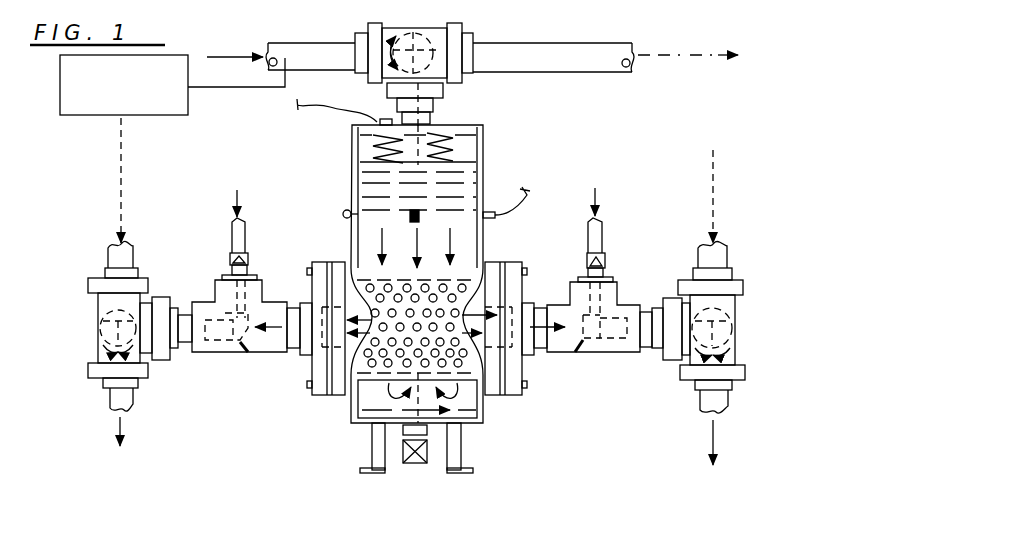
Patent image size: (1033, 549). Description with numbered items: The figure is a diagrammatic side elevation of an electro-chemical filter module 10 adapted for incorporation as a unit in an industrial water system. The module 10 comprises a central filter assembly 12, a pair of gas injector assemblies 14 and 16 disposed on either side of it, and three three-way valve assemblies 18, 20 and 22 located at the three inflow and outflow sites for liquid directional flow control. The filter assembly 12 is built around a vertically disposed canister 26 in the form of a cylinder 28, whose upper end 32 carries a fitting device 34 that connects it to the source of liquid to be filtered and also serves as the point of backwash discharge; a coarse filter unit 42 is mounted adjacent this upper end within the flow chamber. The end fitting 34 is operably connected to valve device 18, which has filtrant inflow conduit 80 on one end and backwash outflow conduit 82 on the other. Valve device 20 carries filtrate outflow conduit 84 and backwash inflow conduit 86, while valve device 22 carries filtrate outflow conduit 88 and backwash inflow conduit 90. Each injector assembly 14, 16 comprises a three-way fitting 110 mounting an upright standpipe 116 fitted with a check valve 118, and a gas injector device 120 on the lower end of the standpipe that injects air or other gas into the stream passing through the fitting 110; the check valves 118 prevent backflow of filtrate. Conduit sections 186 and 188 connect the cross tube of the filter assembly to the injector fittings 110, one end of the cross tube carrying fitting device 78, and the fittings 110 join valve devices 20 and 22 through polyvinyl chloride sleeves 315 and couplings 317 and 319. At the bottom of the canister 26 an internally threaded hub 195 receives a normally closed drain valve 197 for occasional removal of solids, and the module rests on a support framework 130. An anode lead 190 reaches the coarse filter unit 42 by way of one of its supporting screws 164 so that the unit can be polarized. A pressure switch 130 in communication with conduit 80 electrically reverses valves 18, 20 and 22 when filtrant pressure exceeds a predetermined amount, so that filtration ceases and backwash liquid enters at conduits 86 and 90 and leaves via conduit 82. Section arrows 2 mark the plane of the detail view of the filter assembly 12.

The electro-chemical filter module 10 is at (645, 162).
The filter assembly 12 is at (416, 300).
The gas injector assembly 14 is at (232, 376).
The gas injector assembly 16 is at (600, 378).
The three way valve assembly 18 is at (372, 76).
The three way valve assembly 20 is at (98, 332).
The three way valve assembly 22 is at (737, 313).
The canister 26 is at (308, 417).
The cylinder 28 is at (478, 147).
The upper end 32 is at (352, 129).
The fitting device 34 is at (467, 115).
The coarse filter unit 42 is at (372, 180).
The fitting device 78 is at (518, 412).
The filtrant inflow pipe or conduit 80 is at (327, 57).
The backwash outflow pipe or conduit 82 is at (543, 55).
The filtrate outflow pipe or conduit 84 is at (118, 399).
The backwash inflow pipe or conduit 86 is at (128, 260).
The filtrate outflow pipe or conduit 88 is at (723, 403).
The backwash inflow pipe or conduit 90 is at (724, 256).
The three way fitting 110 is at (215, 358).
The standpipe 116 is at (243, 235).
The check valve 118 is at (229, 259).
The gas injector device 120 is at (236, 343).
The pressure switch 130 is at (93, 115).
The supporting screws 164 is at (345, 212).
The conduit section 186 is at (295, 312).
The conduit section 188 is at (538, 314).
The anode lead 190 is at (530, 194).
The internally threaded hub 195 is at (408, 428).
The drain valve 197 is at (420, 463).
The polyvinyl chloride sleeves 315 is at (185, 315).
The coupling 317 is at (160, 378).
The coupling 319 is at (665, 378).
The section line 2 is at (447, 108).